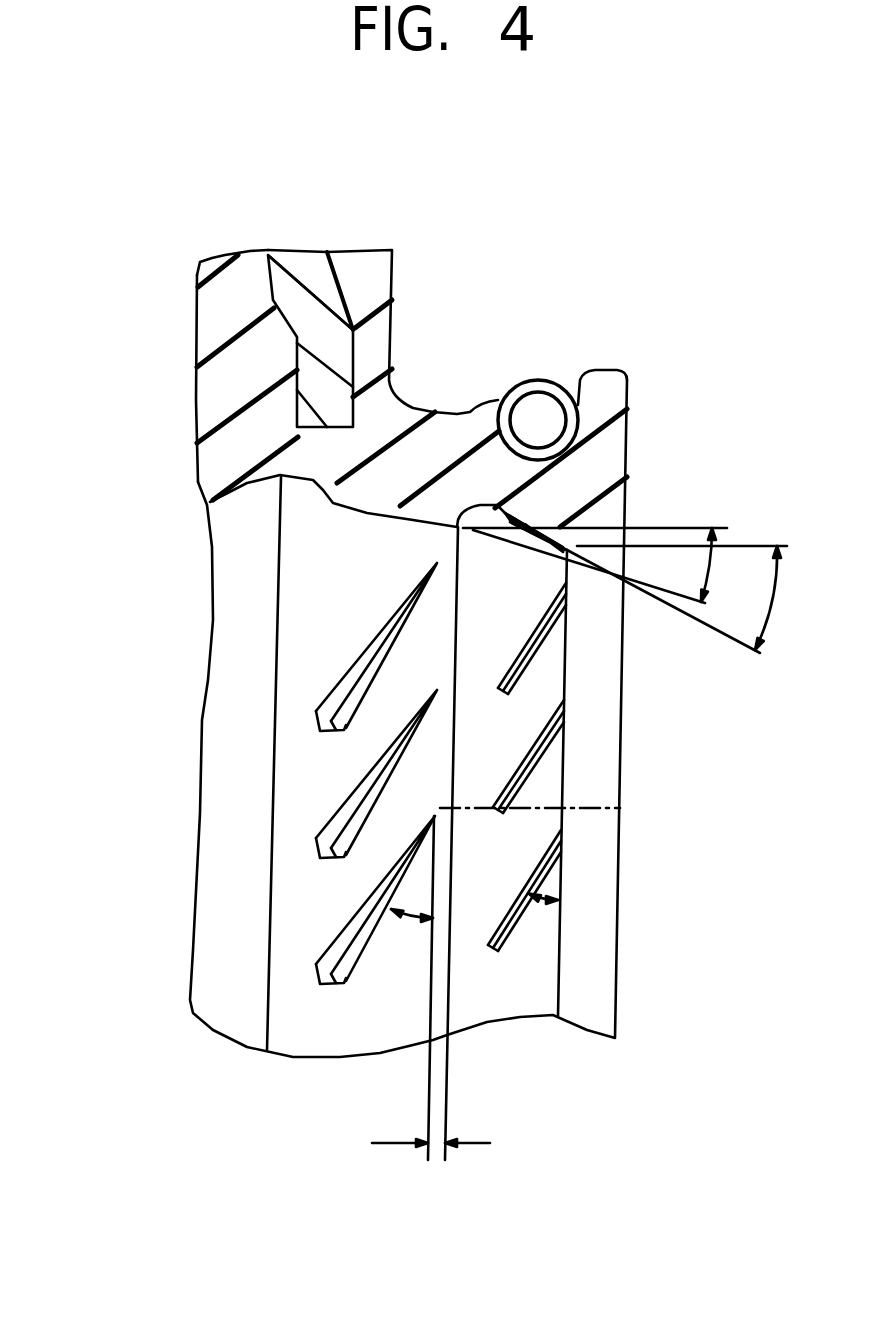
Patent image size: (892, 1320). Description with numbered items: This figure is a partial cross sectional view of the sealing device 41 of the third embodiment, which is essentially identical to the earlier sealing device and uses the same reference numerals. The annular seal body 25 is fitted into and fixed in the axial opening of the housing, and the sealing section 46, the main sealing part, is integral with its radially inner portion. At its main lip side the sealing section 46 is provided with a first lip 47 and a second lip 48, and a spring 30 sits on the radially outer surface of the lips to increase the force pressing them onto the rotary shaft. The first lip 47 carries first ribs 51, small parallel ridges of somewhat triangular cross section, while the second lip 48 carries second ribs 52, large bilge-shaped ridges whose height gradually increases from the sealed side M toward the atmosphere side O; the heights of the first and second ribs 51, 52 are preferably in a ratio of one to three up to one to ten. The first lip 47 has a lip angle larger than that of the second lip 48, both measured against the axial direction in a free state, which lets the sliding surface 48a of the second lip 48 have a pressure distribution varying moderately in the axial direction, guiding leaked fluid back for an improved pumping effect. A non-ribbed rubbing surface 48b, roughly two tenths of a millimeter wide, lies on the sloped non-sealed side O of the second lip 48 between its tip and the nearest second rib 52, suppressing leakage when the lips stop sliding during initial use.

The sealing device 41 is at (487, 212).
The seal body 25 is at (298, 265).
The sealing section 46 is at (389, 412).
The second lip 48 is at (455, 505).
The spring 30 is at (557, 380).
The first lip 47 is at (563, 507).
The sliding surface 48a is at (448, 515).
The second ribs 52 is at (372, 632).
The first ribs 51 is at (530, 645).
The rubbing surface 48b is at (437, 1140).
The sealed side M is at (753, 820).
The atmosphere side O is at (100, 697).